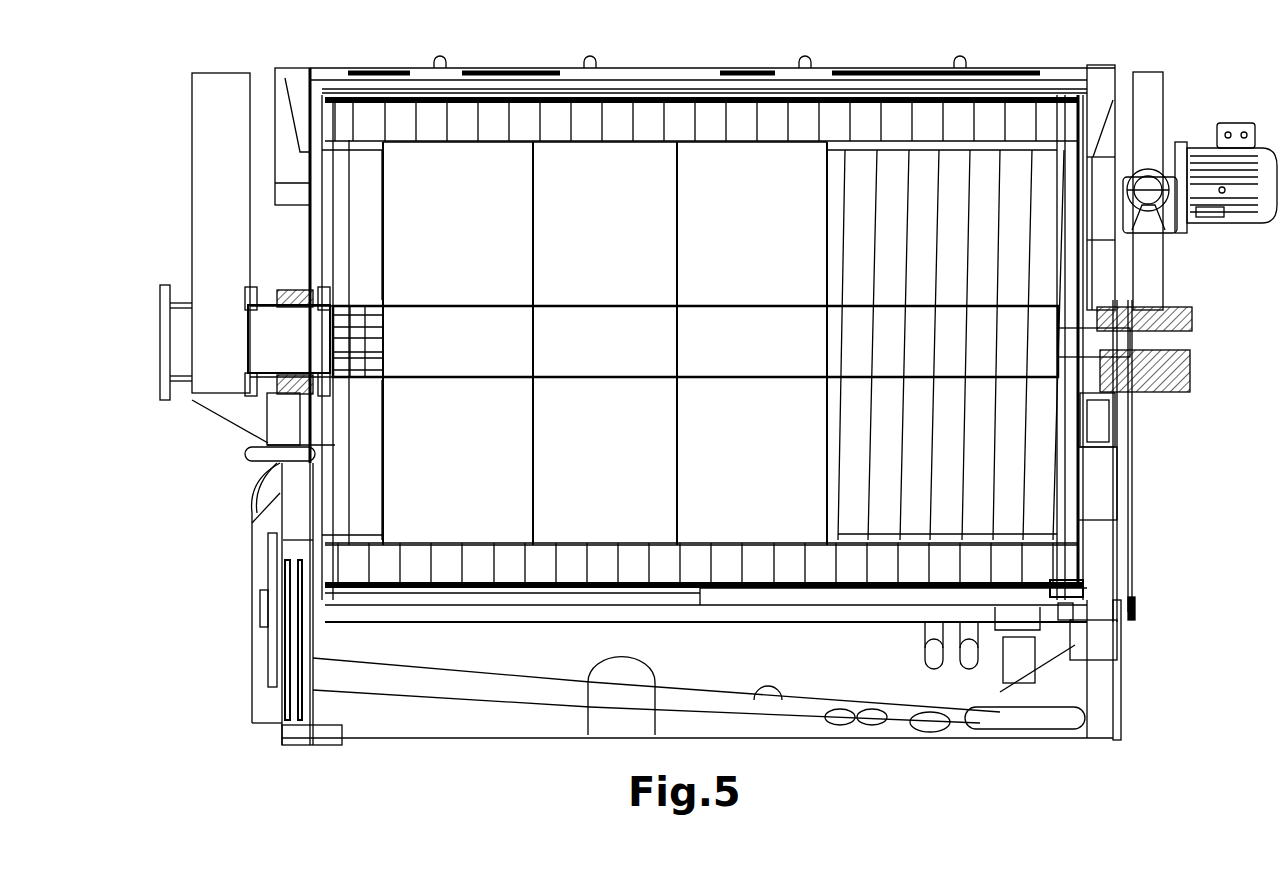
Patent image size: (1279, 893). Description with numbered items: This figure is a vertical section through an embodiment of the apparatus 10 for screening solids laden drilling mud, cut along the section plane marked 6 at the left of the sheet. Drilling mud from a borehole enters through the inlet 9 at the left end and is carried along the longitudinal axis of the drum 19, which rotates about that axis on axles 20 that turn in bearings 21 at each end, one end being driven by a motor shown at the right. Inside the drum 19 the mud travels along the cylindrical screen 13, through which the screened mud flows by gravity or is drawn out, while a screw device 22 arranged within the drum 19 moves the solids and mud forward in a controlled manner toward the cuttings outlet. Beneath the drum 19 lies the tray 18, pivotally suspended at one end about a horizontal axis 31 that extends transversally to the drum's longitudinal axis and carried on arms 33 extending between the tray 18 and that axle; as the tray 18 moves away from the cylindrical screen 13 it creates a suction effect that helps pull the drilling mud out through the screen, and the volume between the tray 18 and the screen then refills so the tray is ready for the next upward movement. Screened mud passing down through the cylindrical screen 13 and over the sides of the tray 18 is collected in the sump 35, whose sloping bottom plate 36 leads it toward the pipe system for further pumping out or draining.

The section line 6 is at (275, 35).
The inlet 9 is at (177, 345).
The apparatus 10 is at (1038, 50).
The cylindrical screen 13 is at (638, 90).
The tray 18 is at (276, 558).
The drum 19 is at (497, 180).
The axles 20 is at (267, 307).
The bearings 21 is at (293, 300).
The screw device 22 is at (1010, 468).
The horizontal axis 31 is at (1033, 632).
The arms 33 is at (798, 612).
The sump 35 is at (953, 702).
The sloping bottom plate 36 is at (782, 687).